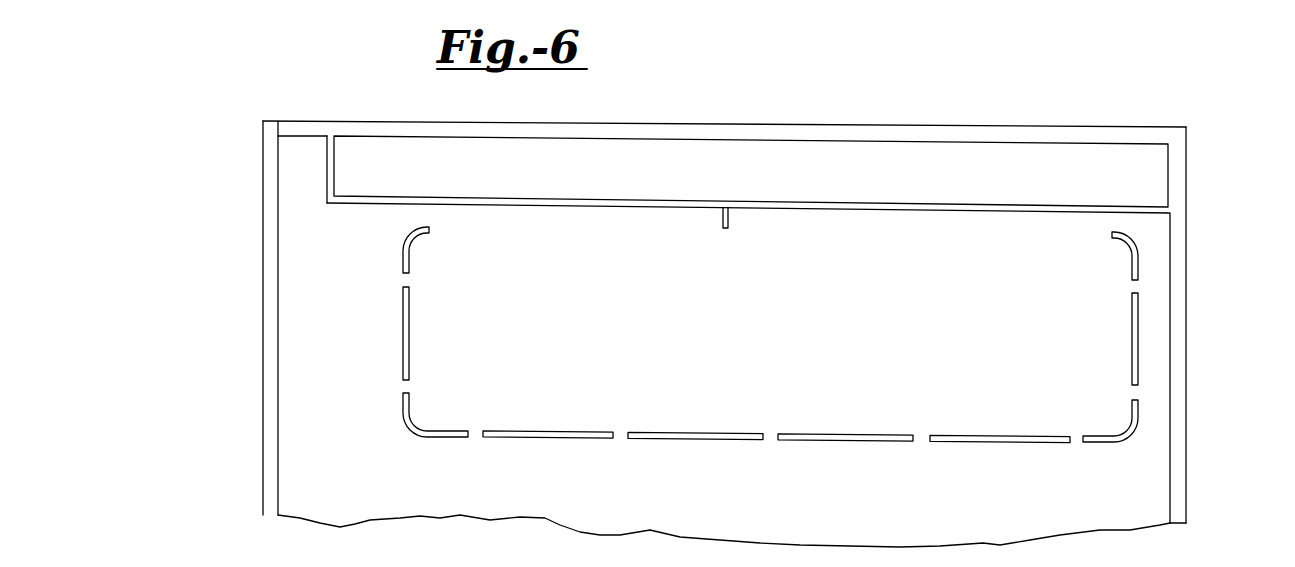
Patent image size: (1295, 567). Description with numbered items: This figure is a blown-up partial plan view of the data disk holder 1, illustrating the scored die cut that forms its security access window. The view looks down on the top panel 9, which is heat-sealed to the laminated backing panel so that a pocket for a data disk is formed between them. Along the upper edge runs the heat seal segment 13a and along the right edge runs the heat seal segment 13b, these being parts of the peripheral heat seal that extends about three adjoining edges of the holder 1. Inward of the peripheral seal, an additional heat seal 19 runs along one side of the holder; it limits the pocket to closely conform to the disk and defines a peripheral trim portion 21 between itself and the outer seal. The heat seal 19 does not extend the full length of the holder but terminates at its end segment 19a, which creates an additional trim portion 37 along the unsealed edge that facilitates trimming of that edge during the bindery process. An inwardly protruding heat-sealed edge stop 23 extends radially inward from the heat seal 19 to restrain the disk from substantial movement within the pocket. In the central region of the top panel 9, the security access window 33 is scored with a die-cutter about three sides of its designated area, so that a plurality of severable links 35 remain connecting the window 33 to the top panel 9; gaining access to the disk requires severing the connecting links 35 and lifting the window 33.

The data disk holder 1 is at (243, 198).
The top panel 9 is at (302, 448).
The heat seal segment 13a is at (746, 132).
The heat seal segment 13b is at (1186, 382).
The heat seal 19 is at (507, 203).
The end segment 19a is at (327, 181).
The peripheral trim portion 21 is at (958, 157).
The edge stop 23 is at (722, 217).
The security access window 33 is at (766, 364).
The severable links 35 is at (623, 424).
The trim portion 37 is at (299, 143).